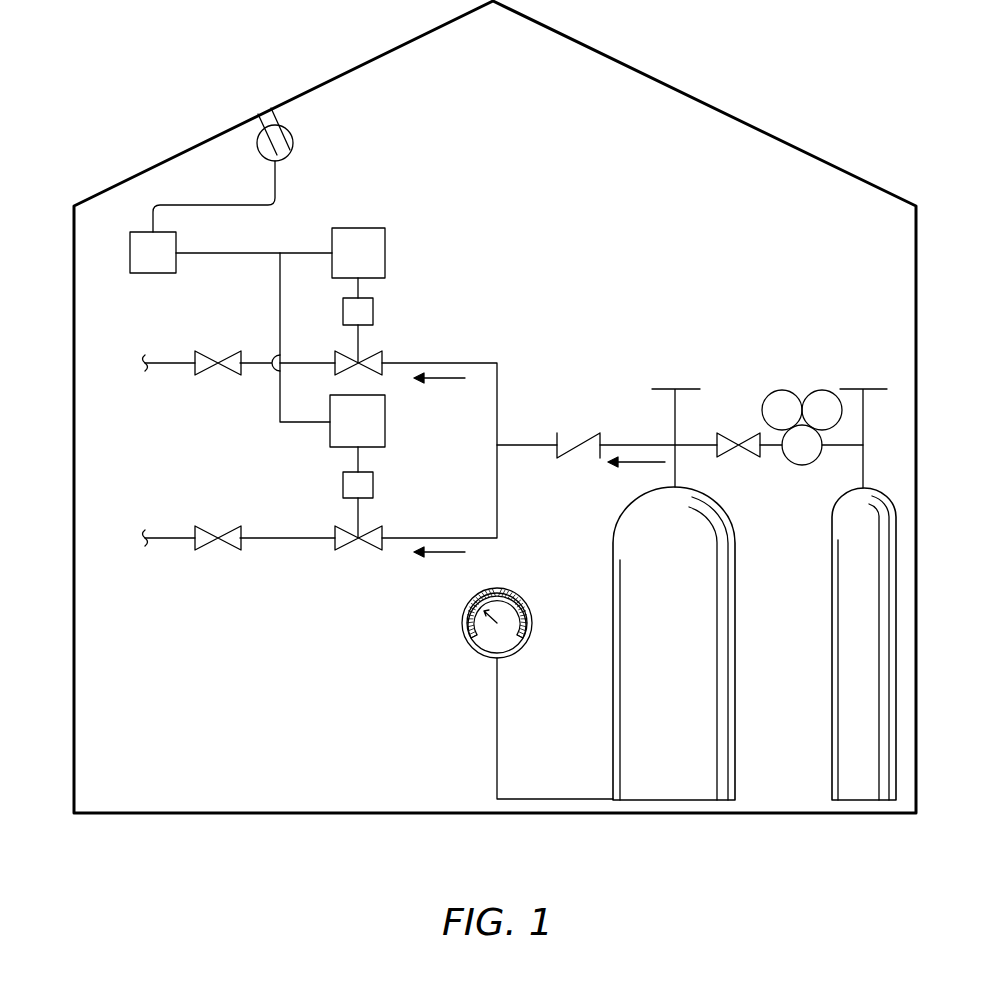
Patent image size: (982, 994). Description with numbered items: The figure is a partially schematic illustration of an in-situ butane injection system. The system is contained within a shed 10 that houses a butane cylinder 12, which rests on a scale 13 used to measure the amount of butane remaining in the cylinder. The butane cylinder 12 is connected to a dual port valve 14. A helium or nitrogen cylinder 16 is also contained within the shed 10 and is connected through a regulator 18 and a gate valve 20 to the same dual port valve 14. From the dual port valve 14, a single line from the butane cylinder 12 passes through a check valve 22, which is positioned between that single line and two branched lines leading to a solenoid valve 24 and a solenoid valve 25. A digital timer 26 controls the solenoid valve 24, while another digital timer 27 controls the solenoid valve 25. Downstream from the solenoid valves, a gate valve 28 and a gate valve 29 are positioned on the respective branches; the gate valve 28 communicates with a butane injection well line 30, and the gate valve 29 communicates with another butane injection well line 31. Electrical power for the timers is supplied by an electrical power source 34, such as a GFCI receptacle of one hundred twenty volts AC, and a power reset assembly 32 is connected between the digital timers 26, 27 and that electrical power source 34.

The shed 10 is at (366, 63).
The butane cylinder 12 is at (613, 716).
The scale 13 is at (531, 623).
The dual port valve 14 is at (678, 445).
The helium or nitrogen cylinder 16 is at (831, 742).
The regulator 18 is at (821, 405).
The gate valve 20 is at (732, 457).
The check valve 22 is at (577, 438).
The solenoid valve 24 is at (371, 353).
The solenoid valve 25 is at (371, 528).
The digital timer 26 is at (386, 256).
The digital timer 27 is at (386, 422).
The gate valve 28 is at (228, 377).
The gate valve 29 is at (228, 552).
The butane injection well line 30 is at (168, 363).
The butane injection well line 31 is at (168, 538).
The power reset assembly 32 is at (130, 253).
The electrical power source 34 is at (294, 143).